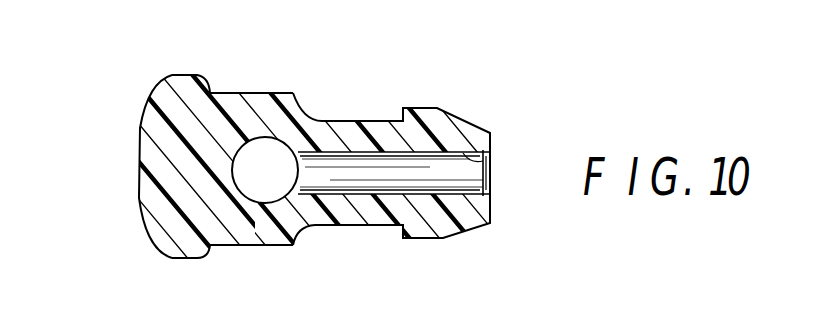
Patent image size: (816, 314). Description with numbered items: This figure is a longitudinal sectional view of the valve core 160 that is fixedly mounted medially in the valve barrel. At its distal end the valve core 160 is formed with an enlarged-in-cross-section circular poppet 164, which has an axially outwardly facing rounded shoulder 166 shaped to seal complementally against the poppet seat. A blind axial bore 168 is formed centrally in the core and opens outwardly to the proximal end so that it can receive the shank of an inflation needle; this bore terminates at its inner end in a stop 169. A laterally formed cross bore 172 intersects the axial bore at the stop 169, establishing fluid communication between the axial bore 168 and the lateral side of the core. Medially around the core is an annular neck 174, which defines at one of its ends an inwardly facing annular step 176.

The valve core 160 is at (390, 96).
The circular poppet 164 is at (137, 154).
The rounded shoulder 166 is at (204, 74).
The blind axial bore 168 is at (486, 163).
The stop 169 is at (236, 162).
The cross bore 172 is at (272, 197).
The annular neck 174 is at (341, 121).
The annular step 176 is at (403, 238).